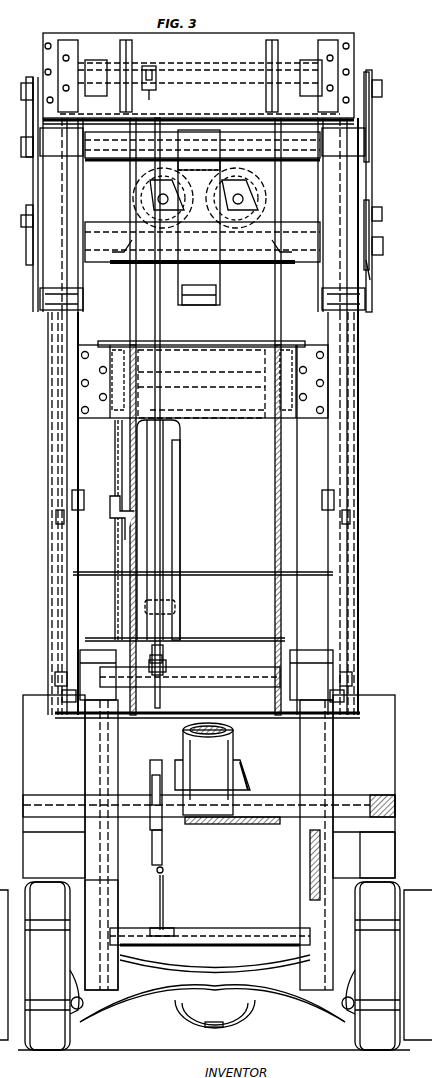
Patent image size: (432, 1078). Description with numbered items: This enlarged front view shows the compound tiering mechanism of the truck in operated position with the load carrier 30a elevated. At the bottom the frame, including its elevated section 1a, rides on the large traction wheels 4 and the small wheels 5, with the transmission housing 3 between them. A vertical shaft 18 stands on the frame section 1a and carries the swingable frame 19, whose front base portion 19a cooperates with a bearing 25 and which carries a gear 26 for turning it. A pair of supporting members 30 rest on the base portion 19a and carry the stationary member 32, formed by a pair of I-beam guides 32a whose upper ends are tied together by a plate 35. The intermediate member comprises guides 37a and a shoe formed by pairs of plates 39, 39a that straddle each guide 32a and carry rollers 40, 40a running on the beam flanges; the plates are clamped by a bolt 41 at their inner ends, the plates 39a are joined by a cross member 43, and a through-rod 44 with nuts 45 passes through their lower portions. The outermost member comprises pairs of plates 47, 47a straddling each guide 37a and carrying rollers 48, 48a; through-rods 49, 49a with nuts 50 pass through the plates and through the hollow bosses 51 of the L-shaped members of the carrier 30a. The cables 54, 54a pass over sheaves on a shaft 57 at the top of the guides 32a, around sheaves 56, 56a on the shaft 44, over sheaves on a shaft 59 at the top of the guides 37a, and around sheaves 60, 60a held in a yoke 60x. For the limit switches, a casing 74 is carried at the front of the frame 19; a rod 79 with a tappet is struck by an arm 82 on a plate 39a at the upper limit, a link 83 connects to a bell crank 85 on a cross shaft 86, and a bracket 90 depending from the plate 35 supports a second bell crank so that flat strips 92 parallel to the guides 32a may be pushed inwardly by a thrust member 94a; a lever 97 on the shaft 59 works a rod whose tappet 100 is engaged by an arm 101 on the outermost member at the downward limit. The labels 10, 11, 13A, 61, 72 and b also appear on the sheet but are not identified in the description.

The housing 3 is at (190, 1014).
The relatively large wheels 4 is at (26, 898).
The relatively small wheels 5 is at (289, 48).
The section line 10 is at (292, 344).
The section line 11 is at (124, 346).
The section line 13A is at (214, 740).
The vertical shaft 18 is at (236, 737).
The frame 19 is at (386, 794).
The front base portion 19a is at (52, 804).
The bearing 25 is at (244, 776).
The gear 26 is at (262, 841).
The supporting members 30 is at (112, 764).
The load carrier 30a is at (366, 187).
The member 32 is at (114, 935).
The guides 32a is at (86, 728).
The plate 35 is at (204, 412).
The guides 37a is at (357, 420).
The plates 39 is at (62, 566).
The plates 39a is at (114, 536).
The rollers 40 is at (62, 494).
The rollers 40a is at (80, 656).
The bolt 41 is at (56, 520).
The cross member 43 is at (217, 562).
The through-rod 44 is at (50, 670).
The nuts 45 is at (62, 690).
The plates 47 is at (31, 190).
The plates 47a is at (86, 206).
The rollers 48 is at (361, 72).
The rollers 48a is at (367, 270).
The through-rod 49 is at (18, 138).
The through-rod 49a is at (377, 216).
The nuts 50 is at (22, 135).
The hollow bosses 51 is at (54, 135).
The cable 54 is at (128, 298).
The cable 54a is at (272, 297).
The sheave 56 is at (166, 646).
The sheave 56a is at (276, 646).
The shaft 57 is at (220, 678).
The shaft 59 is at (204, 72).
The sheave 60 is at (126, 184).
The sheave 60a is at (269, 176).
The yoke 60x is at (166, 278).
The guide 61 is at (124, 434).
The top plate 72 is at (106, 42).
The casing 74 is at (177, 806).
The rod 79 is at (122, 530).
The arm 82 is at (146, 532).
The link 83 is at (184, 850).
The bell crank 85 is at (164, 902).
The cross shaft 86 is at (216, 920).
The bracket 90 is at (178, 439).
The flat strips 92 is at (180, 494).
The thrust member 94a is at (178, 607).
The lever 97 is at (154, 65).
The adjustable tappet 100 is at (166, 658).
The arm 101 is at (220, 128).
The detail b is at (397, 229).
The elevated section 1a is at (377, 855).